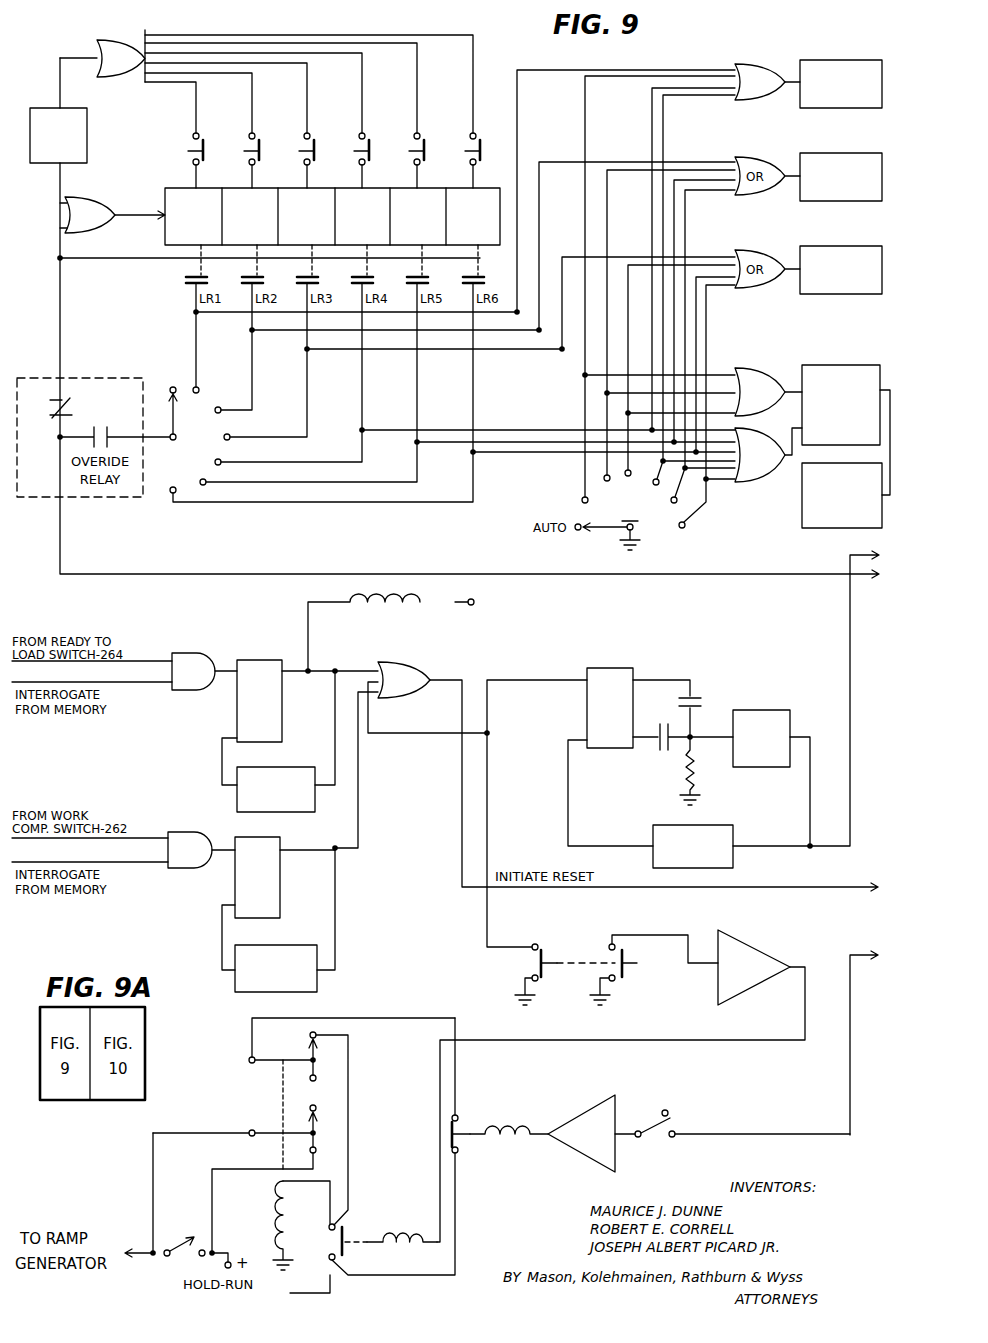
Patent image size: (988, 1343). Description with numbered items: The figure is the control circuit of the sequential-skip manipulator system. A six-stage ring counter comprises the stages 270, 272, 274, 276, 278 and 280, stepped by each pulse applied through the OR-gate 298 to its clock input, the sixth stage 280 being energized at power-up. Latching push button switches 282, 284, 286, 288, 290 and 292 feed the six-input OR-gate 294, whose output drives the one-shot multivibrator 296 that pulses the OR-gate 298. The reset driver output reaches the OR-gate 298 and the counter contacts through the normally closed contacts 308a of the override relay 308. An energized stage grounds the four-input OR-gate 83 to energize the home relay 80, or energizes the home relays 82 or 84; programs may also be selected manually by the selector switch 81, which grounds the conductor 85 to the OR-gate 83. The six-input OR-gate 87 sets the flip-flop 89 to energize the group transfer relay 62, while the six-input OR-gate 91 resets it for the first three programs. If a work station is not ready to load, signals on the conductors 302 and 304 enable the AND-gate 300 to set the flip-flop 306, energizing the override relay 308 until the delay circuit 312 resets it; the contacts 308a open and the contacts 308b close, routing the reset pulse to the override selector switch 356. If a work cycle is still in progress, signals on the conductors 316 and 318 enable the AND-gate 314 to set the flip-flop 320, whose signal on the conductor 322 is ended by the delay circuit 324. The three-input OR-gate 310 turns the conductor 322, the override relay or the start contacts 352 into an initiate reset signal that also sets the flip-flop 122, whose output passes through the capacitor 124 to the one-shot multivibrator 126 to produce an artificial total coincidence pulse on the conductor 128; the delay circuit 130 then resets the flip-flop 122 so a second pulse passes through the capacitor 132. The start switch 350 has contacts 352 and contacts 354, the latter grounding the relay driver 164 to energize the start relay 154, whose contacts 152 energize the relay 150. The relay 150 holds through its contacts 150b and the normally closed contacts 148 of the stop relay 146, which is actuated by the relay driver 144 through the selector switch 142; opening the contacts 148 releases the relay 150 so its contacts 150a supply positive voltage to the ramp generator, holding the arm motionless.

The six-input OR-gate 294 is at (110, 78).
The one-shot multivibrator 296 is at (87, 136).
The two-input OR-gate 298 is at (90, 197).
The first ring counter stage 270 is at (170, 230).
The second ring counter stage 272 is at (242, 197).
The third ring counter stage 274 is at (298, 197).
The counter stage 4 276 is at (352, 197).
The fifth ring counter stage 278 is at (408, 197).
The sixth ring counter stage 280 is at (464, 197).
The push button switch 282 is at (206, 133).
The push button switch 284 is at (262, 133).
The push button switch 286 is at (317, 133).
The push button switch 288 is at (372, 133).
The push button switch 290 is at (427, 133).
The push button switch 292 is at (483, 133).
The normally closed contacts of override relay 308a is at (70, 398).
The normally open contacts of override relay 308b is at (107, 426).
The override selector switch 356 is at (200, 464).
The four-input OR-gate 83 is at (772, 48).
The home relay 80 is at (852, 58).
The home relay 82 is at (856, 152).
The home relay 84 is at (858, 245).
The six-input OR-gate 91 is at (777, 353).
The flip-flop circuit 89 is at (855, 363).
The six-input OR-gate 87 is at (760, 474).
The group transfer relay 62 is at (802, 512).
The conductor 85 is at (585, 468).
The selector switch 81 is at (630, 526).
The override relay 308 is at (325, 598).
The two-input AND-gate 300 is at (205, 656).
The conductor 302 is at (92, 664).
The conductor 304 is at (116, 681).
The flip-flop 306 is at (266, 658).
The delay circuit 312 is at (283, 766).
The three-input OR-gate 310 is at (623, 768).
The conductor 322 is at (358, 840).
The conductor 316 is at (77, 841).
The conductor 318 is at (97, 861).
The AND-gate 314 is at (190, 870).
The flip-flop circuit 320 is at (282, 841).
The delay circuit 324 is at (280, 945).
The flip-flop circuit 122 is at (612, 667).
The capacitor 124 is at (695, 697).
The capacitor 132 is at (656, 752).
The one-shot multivibrator 126 is at (765, 710).
The output conductor 128 is at (850, 733).
The delay circuit 130 is at (718, 825).
The first set of normally open contacts 352 is at (530, 967).
The push button start switch 350 is at (632, 970).
The second set of normally open contacts 354 is at (614, 990).
The relay driver 164 is at (745, 947).
The relay driver circuit 144 is at (594, 1097).
The stop relay 146 is at (508, 1123).
The normally closed contacts 148 is at (460, 1127).
The selector switch 142 is at (650, 1140).
The relay 150 is at (290, 1239).
The normally closed contacts 150a is at (318, 1143).
The normally open contacts 150b is at (311, 1038).
The normally open contacts 152 is at (334, 1262).
The start relay 154 is at (415, 1249).